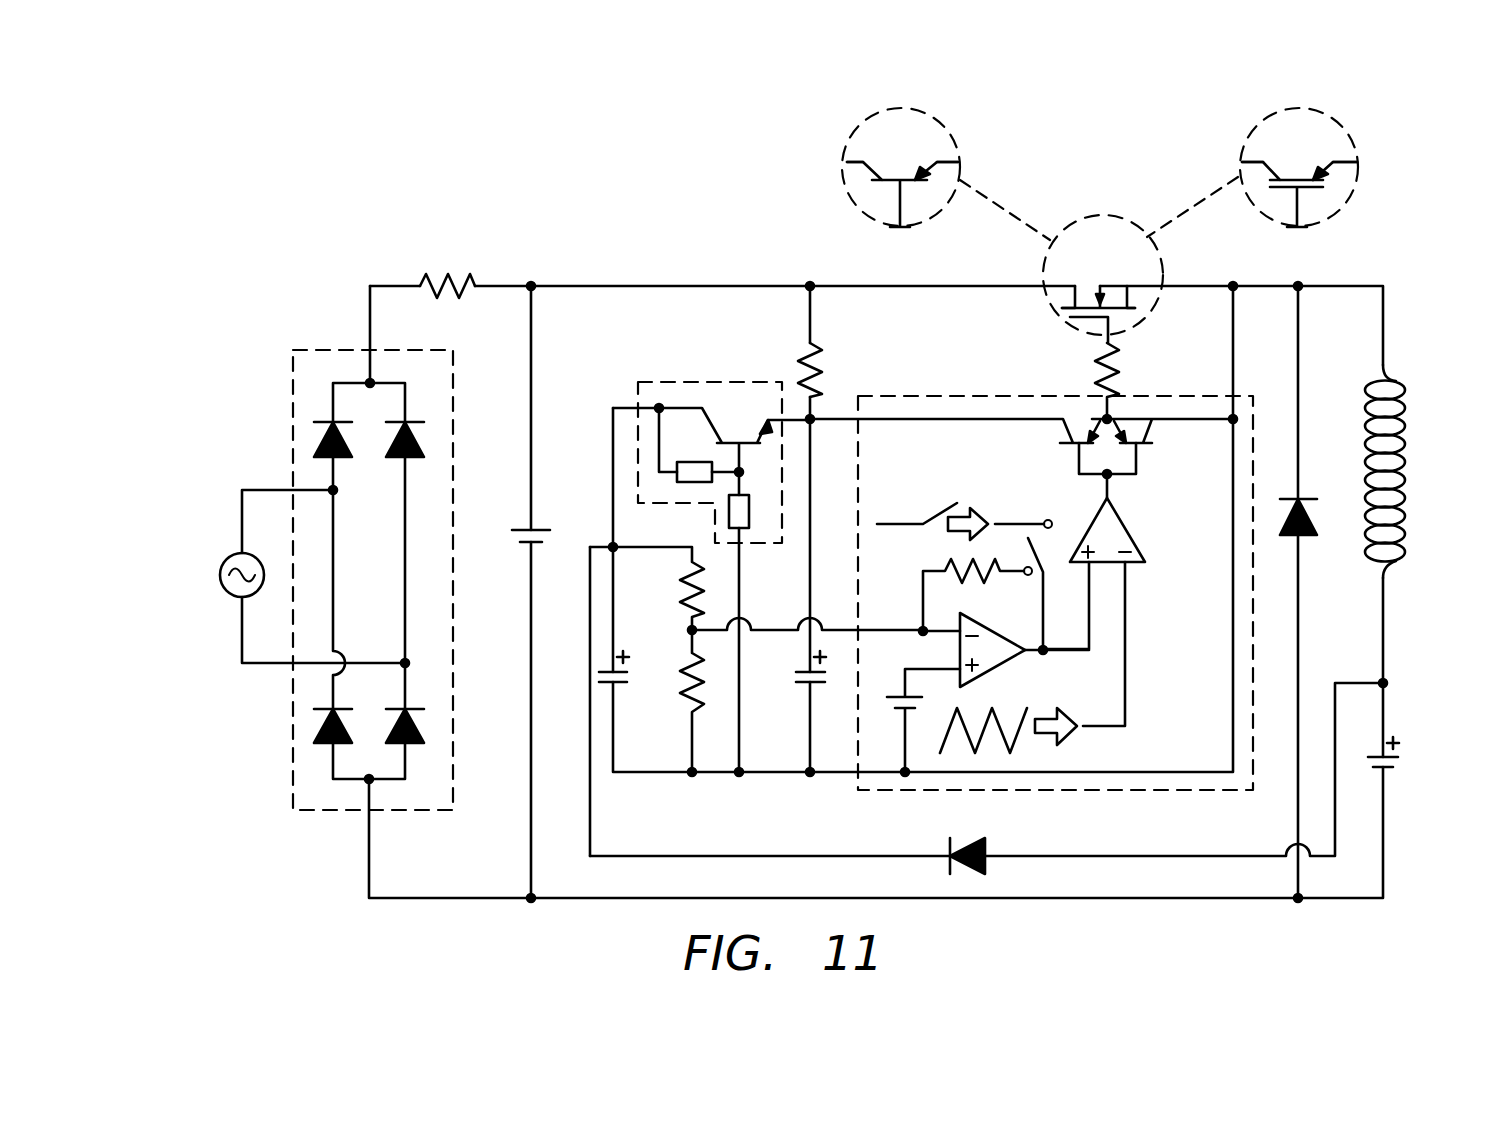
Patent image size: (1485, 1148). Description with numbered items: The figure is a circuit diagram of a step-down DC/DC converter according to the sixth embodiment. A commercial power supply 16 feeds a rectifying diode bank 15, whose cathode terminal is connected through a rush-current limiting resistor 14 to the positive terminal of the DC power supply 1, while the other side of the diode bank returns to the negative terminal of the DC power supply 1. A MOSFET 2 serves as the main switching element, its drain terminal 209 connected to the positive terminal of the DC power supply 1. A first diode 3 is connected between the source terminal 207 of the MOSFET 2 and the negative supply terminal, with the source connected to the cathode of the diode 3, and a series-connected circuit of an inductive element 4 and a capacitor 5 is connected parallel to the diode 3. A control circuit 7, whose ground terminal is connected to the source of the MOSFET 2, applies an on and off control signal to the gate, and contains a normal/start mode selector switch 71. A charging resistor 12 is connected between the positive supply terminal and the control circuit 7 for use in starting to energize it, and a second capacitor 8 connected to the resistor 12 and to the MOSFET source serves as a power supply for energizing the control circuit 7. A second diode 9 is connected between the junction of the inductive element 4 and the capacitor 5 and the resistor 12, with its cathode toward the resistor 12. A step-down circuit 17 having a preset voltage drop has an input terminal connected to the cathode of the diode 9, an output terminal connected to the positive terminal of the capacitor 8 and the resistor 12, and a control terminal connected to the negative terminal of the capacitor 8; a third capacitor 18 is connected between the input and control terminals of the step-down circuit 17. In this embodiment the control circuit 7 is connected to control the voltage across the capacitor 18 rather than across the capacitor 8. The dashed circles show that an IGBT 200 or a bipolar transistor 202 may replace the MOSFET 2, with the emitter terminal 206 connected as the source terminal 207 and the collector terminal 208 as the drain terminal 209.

The DC power supply 1 is at (515, 537).
The MOSFET 2 is at (1107, 285).
The first diode 3 is at (1308, 535).
The inductive element 4 is at (1405, 405).
The capacitor 5 is at (1393, 770).
The control circuit 7 is at (915, 393).
The second capacitor 8 is at (800, 686).
The second diode 9 is at (970, 843).
The charging resistor 12 is at (805, 352).
The rush-current limiting resistor 14 is at (455, 277).
The rectifying diode bank 15 is at (290, 768).
The commercial power supply 16 is at (229, 597).
The step-down circuit 17 is at (697, 378).
The third capacitor 18 is at (618, 685).
The normal/start mode selector switch 71 is at (1040, 553).
The IGBT 200 is at (1283, 110).
The bipolar transistor 202 is at (877, 115).
The emitter terminal 206 is at (952, 142).
The source terminal 207 is at (1140, 287).
The collector terminal 208 is at (852, 150).
The drain terminal 209 is at (1065, 285).